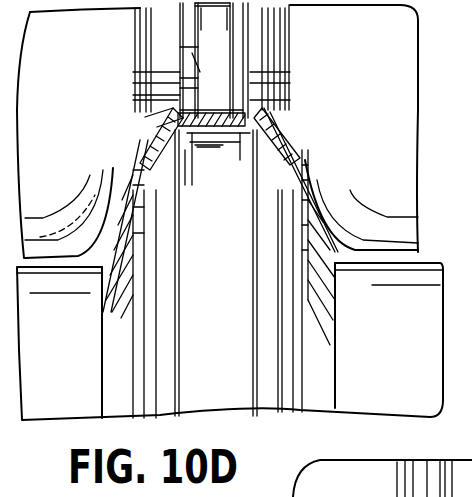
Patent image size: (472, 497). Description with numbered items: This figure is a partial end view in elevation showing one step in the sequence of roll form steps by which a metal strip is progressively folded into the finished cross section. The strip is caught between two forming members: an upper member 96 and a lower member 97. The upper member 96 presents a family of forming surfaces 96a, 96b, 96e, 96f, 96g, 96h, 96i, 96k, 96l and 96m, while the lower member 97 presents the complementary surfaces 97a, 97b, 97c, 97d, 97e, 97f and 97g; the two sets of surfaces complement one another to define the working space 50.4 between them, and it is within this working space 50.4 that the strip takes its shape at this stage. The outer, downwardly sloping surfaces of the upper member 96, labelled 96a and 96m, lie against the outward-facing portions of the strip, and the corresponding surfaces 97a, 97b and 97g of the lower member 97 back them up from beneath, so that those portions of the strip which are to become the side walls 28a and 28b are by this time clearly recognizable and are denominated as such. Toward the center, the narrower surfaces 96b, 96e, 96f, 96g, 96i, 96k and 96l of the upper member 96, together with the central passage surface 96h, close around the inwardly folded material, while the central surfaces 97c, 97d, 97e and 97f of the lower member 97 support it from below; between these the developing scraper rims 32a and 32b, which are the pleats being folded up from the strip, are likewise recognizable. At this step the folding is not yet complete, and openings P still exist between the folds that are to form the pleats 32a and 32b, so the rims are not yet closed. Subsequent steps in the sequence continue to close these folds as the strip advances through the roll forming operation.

The upper roll-form die 96 is at (410, 37).
The surface 96a is at (130, 148).
The surface 96b is at (170, 100).
The surface 96e is at (182, 52).
The surface 96f is at (180, 27).
The surface 96g is at (262, 20).
The surface 96h is at (230, 51).
The surface 96i is at (262, 40).
The surface 96k is at (262, 62).
The surface 96l is at (275, 108).
The surface 96m is at (285, 128).
The scraper rim 32a is at (185, 88).
The scraper rim 32b is at (270, 95).
The side wall 28a is at (148, 130).
The side wall 28b is at (298, 158).
The opening P is at (263, 140).
The working space 50.4 is at (176, 172).
The lower roll-form die 97 is at (222, 387).
The surface 97a is at (137, 302).
The surface 97b is at (150, 323).
The surface 97c is at (165, 323).
The surface 97d is at (235, 301).
The surface 97e is at (280, 288).
The surface 97f is at (282, 243).
The surface 97g is at (328, 437).